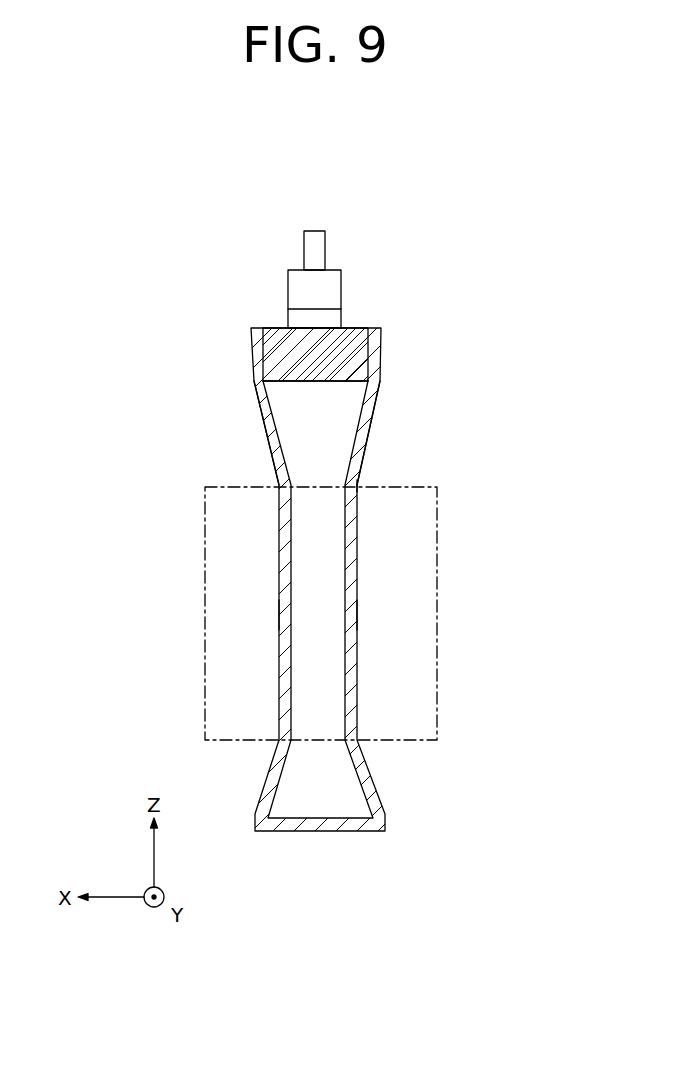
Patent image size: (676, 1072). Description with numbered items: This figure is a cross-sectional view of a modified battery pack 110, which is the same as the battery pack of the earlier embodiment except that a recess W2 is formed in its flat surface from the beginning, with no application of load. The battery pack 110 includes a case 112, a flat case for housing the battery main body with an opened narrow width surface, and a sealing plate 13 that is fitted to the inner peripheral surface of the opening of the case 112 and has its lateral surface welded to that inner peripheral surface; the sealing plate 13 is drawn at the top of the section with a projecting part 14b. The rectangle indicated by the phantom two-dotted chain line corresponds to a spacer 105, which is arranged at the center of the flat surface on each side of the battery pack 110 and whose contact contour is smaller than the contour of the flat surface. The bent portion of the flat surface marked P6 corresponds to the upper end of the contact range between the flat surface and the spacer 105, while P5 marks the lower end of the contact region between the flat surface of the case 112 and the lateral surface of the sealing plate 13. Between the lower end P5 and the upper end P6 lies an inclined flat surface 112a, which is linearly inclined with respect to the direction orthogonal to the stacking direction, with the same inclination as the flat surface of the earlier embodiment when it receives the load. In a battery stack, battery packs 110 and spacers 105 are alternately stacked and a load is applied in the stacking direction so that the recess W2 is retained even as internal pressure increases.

The battery pack 110 is at (338, 512).
The pin 14b is at (326, 247).
The sealing plate 13 is at (347, 327).
The case 112 is at (377, 822).
The inclined flat surface 112a is at (395, 382).
The lower end of the contact region between the flat surface and the sealing plate P5 is at (356, 388).
The upper end of the contact region between the flat surface and the spacer P6 is at (362, 491).
The recess W2 is at (364, 614).
The spacer 105 is at (205, 700).